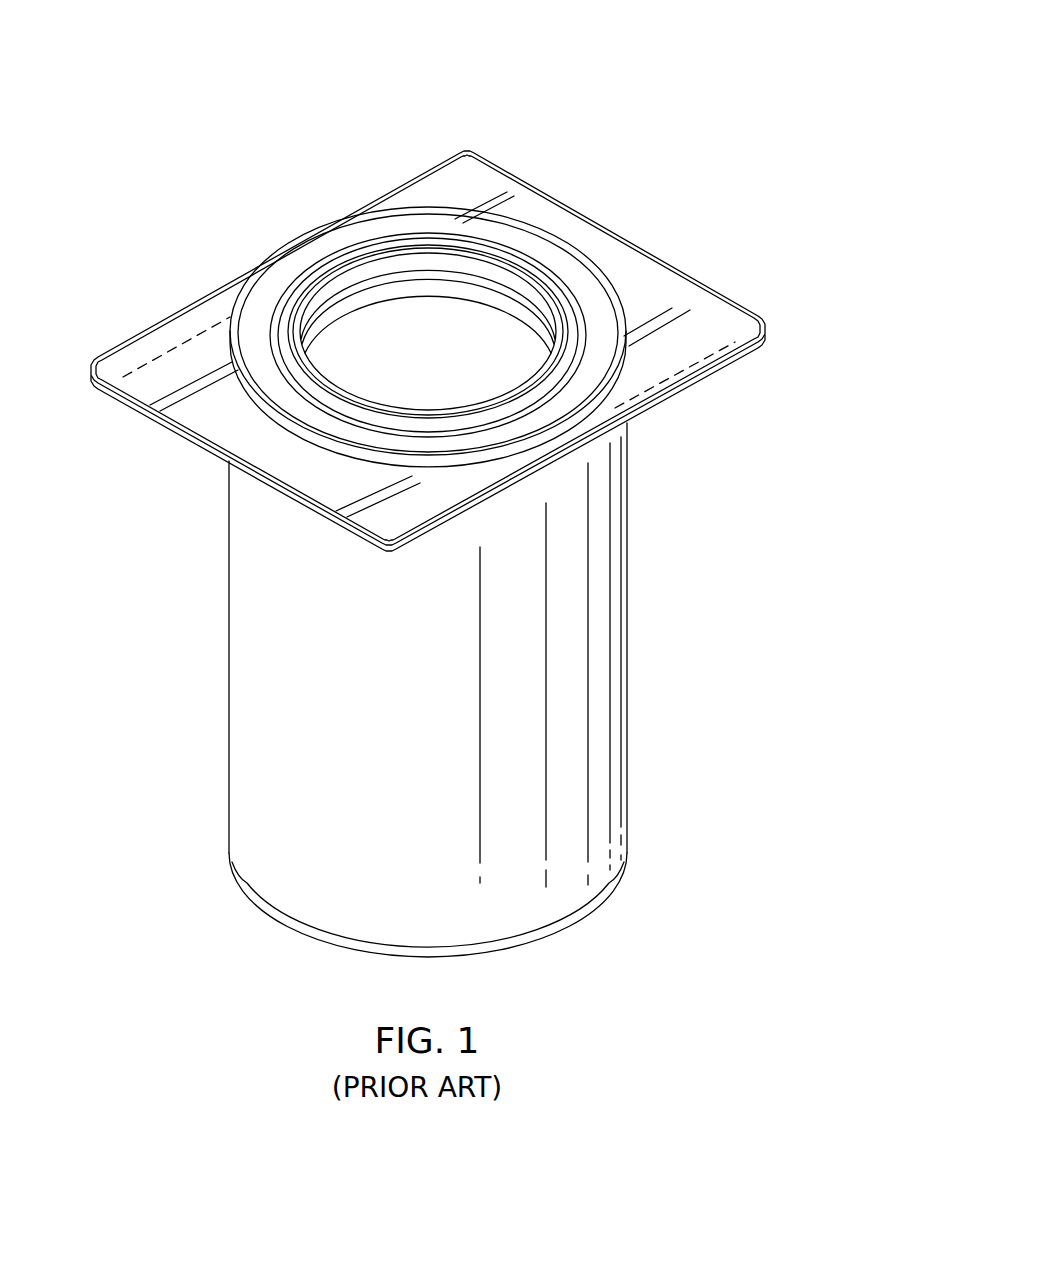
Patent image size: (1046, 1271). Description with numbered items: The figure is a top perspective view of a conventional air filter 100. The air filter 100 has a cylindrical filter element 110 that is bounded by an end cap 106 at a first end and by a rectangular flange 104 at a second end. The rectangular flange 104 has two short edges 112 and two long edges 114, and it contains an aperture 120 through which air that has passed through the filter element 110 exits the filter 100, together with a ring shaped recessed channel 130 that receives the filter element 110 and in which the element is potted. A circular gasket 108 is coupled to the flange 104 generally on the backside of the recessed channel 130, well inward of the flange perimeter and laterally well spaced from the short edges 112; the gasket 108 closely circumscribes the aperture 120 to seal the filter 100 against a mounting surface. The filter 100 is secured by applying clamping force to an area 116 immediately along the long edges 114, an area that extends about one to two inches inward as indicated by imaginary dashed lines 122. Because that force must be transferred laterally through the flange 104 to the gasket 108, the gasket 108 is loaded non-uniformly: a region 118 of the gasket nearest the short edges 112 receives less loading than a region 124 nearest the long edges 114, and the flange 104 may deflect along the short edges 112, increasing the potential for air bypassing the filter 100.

The air filter 100 is at (614, 44).
The rectangular flange 104 is at (488, 188).
The end cap 106 is at (590, 906).
The circular gasket 108 is at (588, 260).
The cylindrical filter element 110 is at (572, 662).
The short edges 112 is at (737, 299).
The long edges 114 is at (202, 297).
The area 116 is at (129, 364).
The region of the gasket 118 is at (533, 225).
The aperture 120 is at (412, 336).
The imaginary dashed lines 122 is at (435, 200).
The region of the gasket 124 is at (320, 256).
The ring shaped recessed channel 130 is at (265, 408).